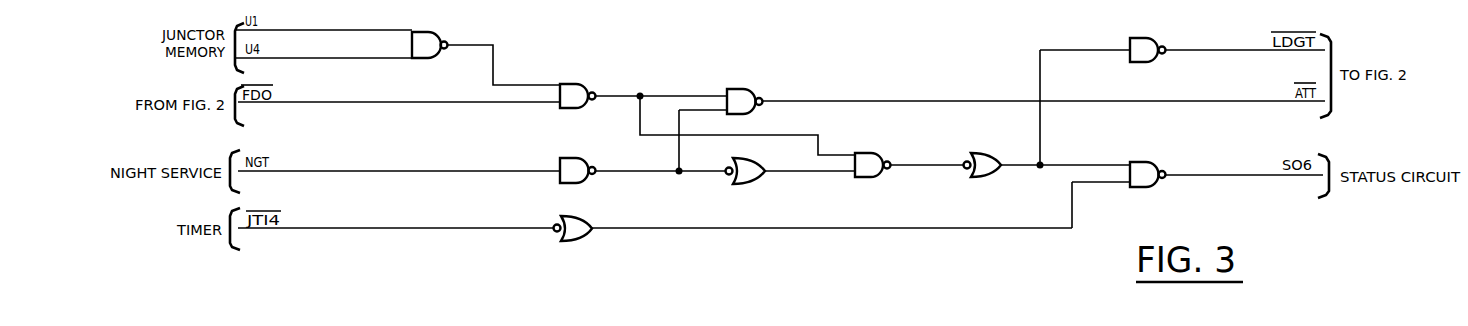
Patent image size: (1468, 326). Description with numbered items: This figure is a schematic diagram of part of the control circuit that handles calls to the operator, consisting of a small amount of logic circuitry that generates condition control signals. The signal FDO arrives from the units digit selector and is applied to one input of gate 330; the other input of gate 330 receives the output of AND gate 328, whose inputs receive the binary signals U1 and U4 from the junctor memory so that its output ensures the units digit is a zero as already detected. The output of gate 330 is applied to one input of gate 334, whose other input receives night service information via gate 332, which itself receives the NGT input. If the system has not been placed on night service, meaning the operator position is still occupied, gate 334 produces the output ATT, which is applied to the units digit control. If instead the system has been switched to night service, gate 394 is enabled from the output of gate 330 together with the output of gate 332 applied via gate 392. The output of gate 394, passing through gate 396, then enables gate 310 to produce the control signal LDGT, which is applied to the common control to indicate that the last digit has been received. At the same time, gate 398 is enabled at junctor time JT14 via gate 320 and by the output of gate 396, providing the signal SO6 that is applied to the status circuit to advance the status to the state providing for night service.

The AND gate 328 is at (412, 58).
The gate 330 is at (568, 84).
The gate 334 is at (745, 89).
The gate 332 is at (568, 158).
The gate 392 is at (737, 184).
The gate 394 is at (862, 177).
The gate 396 is at (987, 153).
The gate 320 is at (566, 216).
The gate 310 is at (1140, 62).
The gate 398 is at (1140, 162).